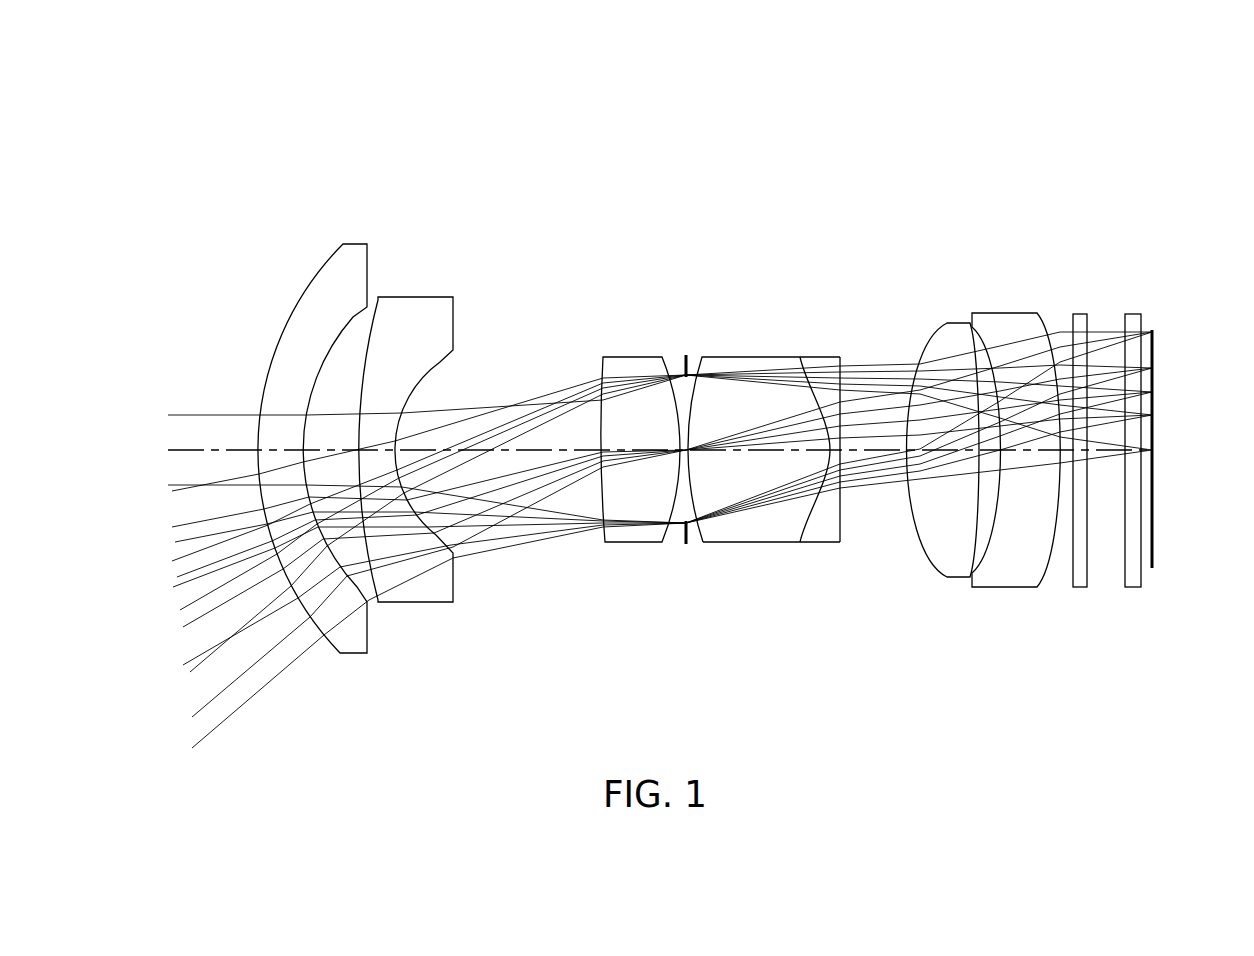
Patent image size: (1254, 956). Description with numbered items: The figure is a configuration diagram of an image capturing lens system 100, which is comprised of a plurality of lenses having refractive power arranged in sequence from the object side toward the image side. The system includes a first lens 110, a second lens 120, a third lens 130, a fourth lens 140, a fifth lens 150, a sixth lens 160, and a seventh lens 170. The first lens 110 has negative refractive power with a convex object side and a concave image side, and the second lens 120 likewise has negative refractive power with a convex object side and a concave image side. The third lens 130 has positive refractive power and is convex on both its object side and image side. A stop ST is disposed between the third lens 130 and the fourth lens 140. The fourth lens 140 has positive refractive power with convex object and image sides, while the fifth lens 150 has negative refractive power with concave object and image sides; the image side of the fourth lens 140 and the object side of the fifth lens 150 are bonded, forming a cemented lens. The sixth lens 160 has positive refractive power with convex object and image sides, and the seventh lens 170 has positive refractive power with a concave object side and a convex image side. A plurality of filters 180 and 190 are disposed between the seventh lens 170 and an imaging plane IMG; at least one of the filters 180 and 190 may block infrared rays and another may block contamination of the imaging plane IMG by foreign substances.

The image capturing lens system 100 is at (782, 268).
The first lens 110 is at (355, 657).
The second lens 120 is at (413, 604).
The third lens 130 is at (633, 544).
The stop ST is at (683, 357).
The fourth lens 140 is at (733, 544).
The fifth lens 150 is at (820, 544).
The sixth lens 160 is at (953, 579).
The seventh lens 170 is at (1008, 589).
The filter 180 is at (1078, 589).
The filter 190 is at (1130, 589).
The imaging plane IMG is at (1153, 332).